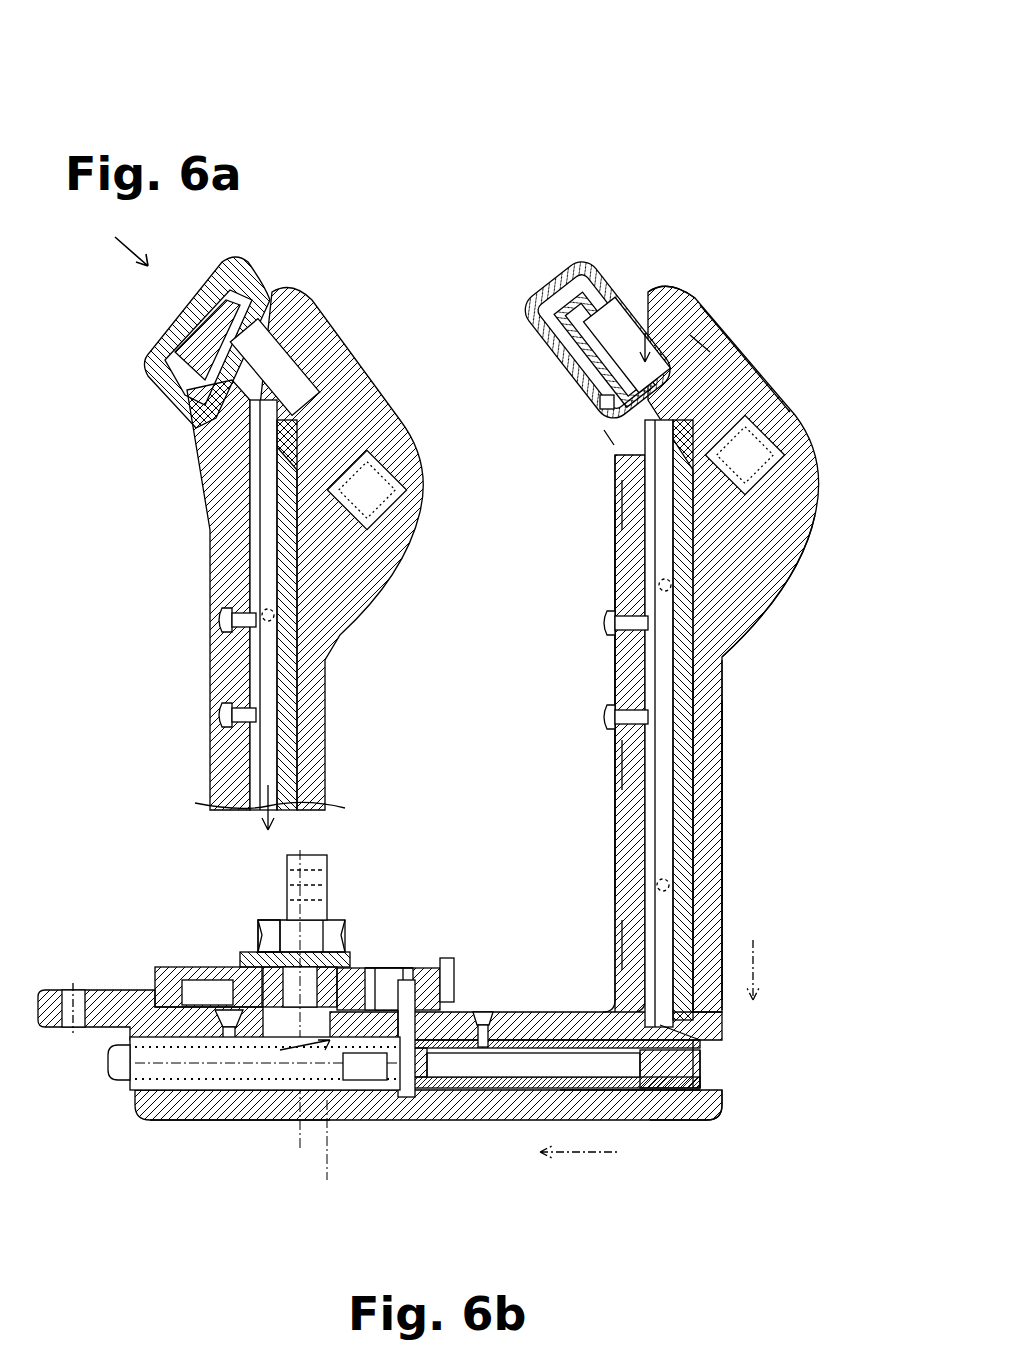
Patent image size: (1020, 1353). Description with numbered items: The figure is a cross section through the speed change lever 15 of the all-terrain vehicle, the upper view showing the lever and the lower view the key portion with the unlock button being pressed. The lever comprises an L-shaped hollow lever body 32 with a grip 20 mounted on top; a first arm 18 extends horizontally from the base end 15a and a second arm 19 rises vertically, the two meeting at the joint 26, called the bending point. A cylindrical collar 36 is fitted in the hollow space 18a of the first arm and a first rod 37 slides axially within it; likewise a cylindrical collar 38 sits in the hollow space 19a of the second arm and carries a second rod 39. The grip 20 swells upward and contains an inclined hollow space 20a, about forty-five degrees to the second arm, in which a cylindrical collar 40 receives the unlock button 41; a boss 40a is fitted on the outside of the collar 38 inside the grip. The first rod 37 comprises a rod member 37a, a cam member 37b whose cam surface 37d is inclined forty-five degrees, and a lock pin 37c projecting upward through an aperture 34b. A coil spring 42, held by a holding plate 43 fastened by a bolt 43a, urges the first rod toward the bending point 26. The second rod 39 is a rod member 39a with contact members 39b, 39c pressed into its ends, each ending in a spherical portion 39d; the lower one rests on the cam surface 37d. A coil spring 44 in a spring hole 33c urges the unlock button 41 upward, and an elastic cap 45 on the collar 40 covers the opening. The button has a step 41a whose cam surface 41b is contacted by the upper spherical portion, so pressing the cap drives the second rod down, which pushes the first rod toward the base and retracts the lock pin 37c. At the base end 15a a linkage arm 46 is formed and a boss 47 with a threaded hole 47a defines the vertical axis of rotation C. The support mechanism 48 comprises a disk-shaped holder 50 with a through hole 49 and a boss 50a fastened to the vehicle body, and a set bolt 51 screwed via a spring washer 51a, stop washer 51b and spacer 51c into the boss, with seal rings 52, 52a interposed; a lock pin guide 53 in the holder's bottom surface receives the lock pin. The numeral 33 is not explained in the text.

The speed change lever 15 is at (628, 104).
The base end 15a is at (272, 1100).
The first arm 18 is at (618, 1136).
The hollow space 18a is at (255, 1095).
The second arm 19 is at (762, 766).
The hollow space 19a is at (680, 905).
The grip 20 is at (745, 350).
The hollow space 20a is at (672, 300).
The joint 26 is at (728, 1135).
The lever body 32 is at (724, 882).
The housing 33 is at (728, 605).
The spring hole 33c is at (785, 450).
The aperture 34b is at (400, 992).
The cylindrical collar 36 is at (641, 1100).
The first rod 37 is at (556, 1205).
The rod member 37a is at (462, 1088).
The cam member 37b is at (540, 1088).
The lock pin 37c is at (435, 1092).
The cam surface 37d is at (702, 1066).
The cylindrical collar 38 is at (702, 832).
The second rod 39 is at (478, 650).
The rod member 39a is at (660, 765).
The contact member 39b is at (604, 500).
The contact member 39c is at (622, 945).
The spherical portion 39d is at (604, 440).
The cylindrical collar 40 is at (768, 385).
The boss 40a is at (705, 568).
The unlock button 41 is at (622, 268).
The step 41a is at (705, 345).
The cam surface 41b is at (600, 405).
The coil spring 42 is at (198, 1098).
The holding plate 43 is at (128, 1085).
The bolt 43a is at (108, 1063).
The coil spring 44 is at (755, 488).
The cap 45 is at (568, 255).
The linkage arm 46 is at (44, 1002).
The boss 47 is at (165, 990).
The threaded hole 47a is at (205, 985).
The support mechanism 48 is at (379, 885).
The through hole 49 is at (352, 962).
The holder 50 is at (440, 975).
The boss 50a is at (288, 858).
The set bolt 51 is at (287, 935).
The spring washer 51a is at (270, 945).
The stop washer 51b is at (385, 960).
The spacer 51c is at (255, 955).
The seal ring 52 is at (448, 960).
The seal ring 52a is at (489, 1012).
The lock pin guide 53 is at (412, 985).
The vertical axis of rotation C is at (331, 1155).